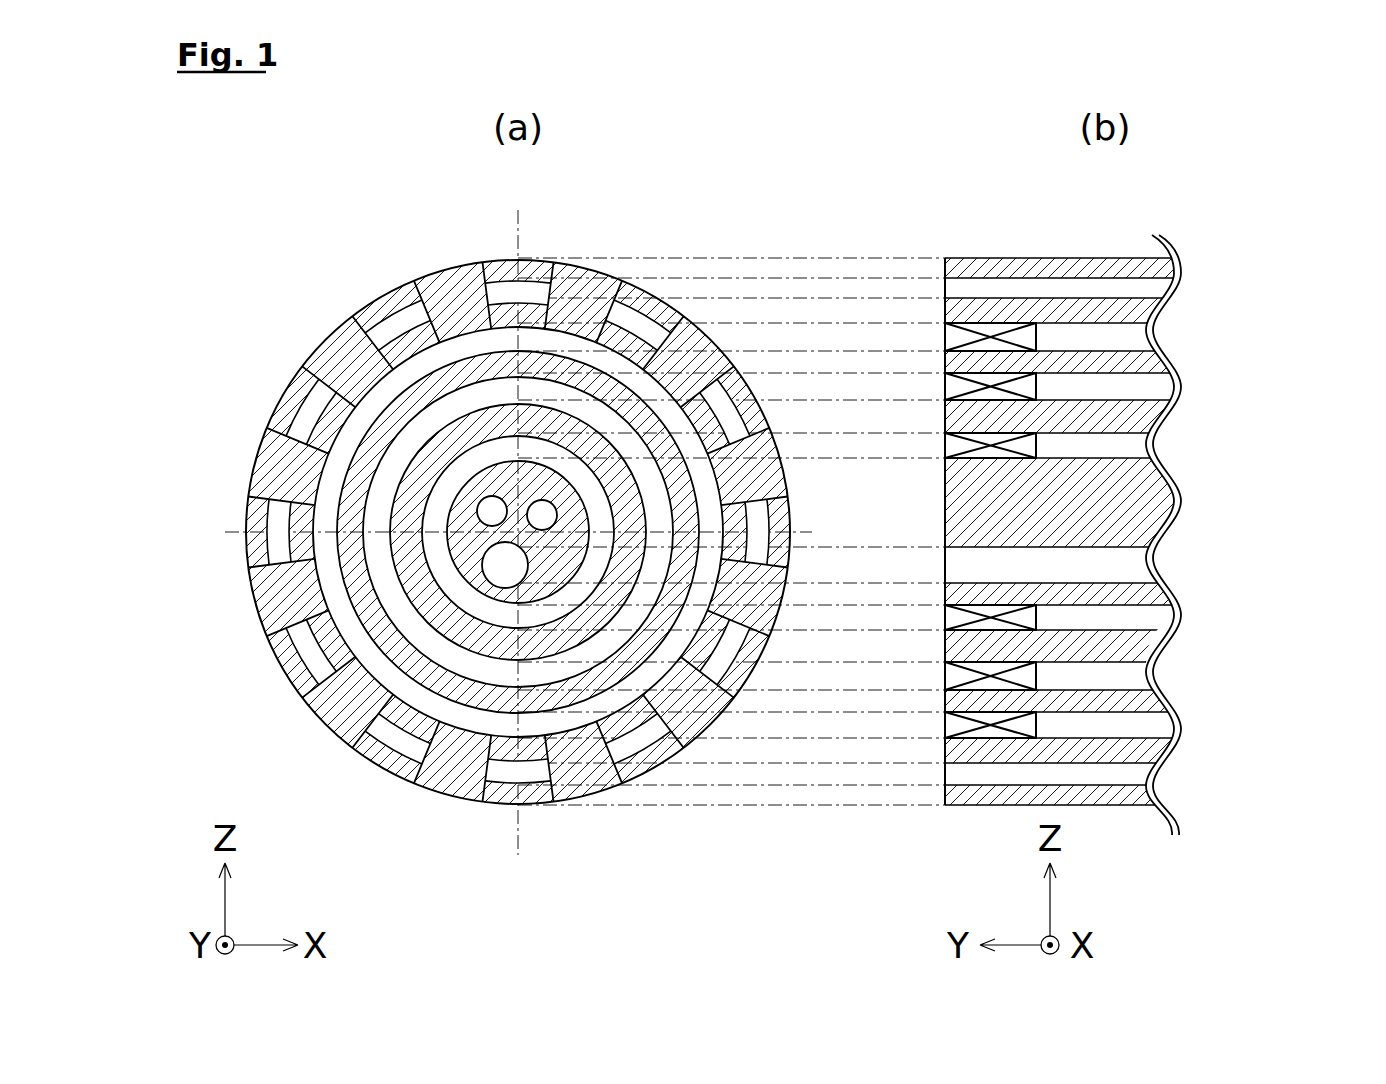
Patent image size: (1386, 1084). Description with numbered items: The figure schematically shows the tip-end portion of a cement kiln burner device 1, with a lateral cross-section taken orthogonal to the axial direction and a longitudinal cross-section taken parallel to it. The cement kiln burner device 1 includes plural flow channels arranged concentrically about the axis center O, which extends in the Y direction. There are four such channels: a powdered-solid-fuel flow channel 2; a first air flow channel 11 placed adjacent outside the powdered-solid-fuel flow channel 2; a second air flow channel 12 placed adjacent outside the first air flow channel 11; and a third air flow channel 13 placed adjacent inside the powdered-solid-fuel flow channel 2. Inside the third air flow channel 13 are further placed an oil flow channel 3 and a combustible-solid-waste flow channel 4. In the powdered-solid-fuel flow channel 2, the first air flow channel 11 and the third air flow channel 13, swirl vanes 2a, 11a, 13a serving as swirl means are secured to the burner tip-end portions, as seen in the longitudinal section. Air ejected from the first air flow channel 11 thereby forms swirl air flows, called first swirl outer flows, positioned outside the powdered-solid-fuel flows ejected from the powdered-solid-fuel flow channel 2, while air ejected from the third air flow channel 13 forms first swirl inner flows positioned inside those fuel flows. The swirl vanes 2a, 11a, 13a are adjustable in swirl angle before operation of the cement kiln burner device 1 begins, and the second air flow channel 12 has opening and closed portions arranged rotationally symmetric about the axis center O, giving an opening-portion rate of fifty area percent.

The cement kiln burner device 1 is at (259, 185).
The powdered-solid-fuel flow channel 2 is at (380, 482).
The swirl vane 2a is at (943, 387).
The oil flow channel 3 is at (543, 513).
The combustible-solid-waste flow channel 4 is at (500, 572).
The first air flow channel 11 is at (357, 420).
The swirl vane 11a is at (943, 337).
The second air flow channel 12 is at (390, 327).
The third air flow channel 13 is at (437, 557).
The swirl vane 13a is at (952, 620).
The axis center O is at (524, 536).